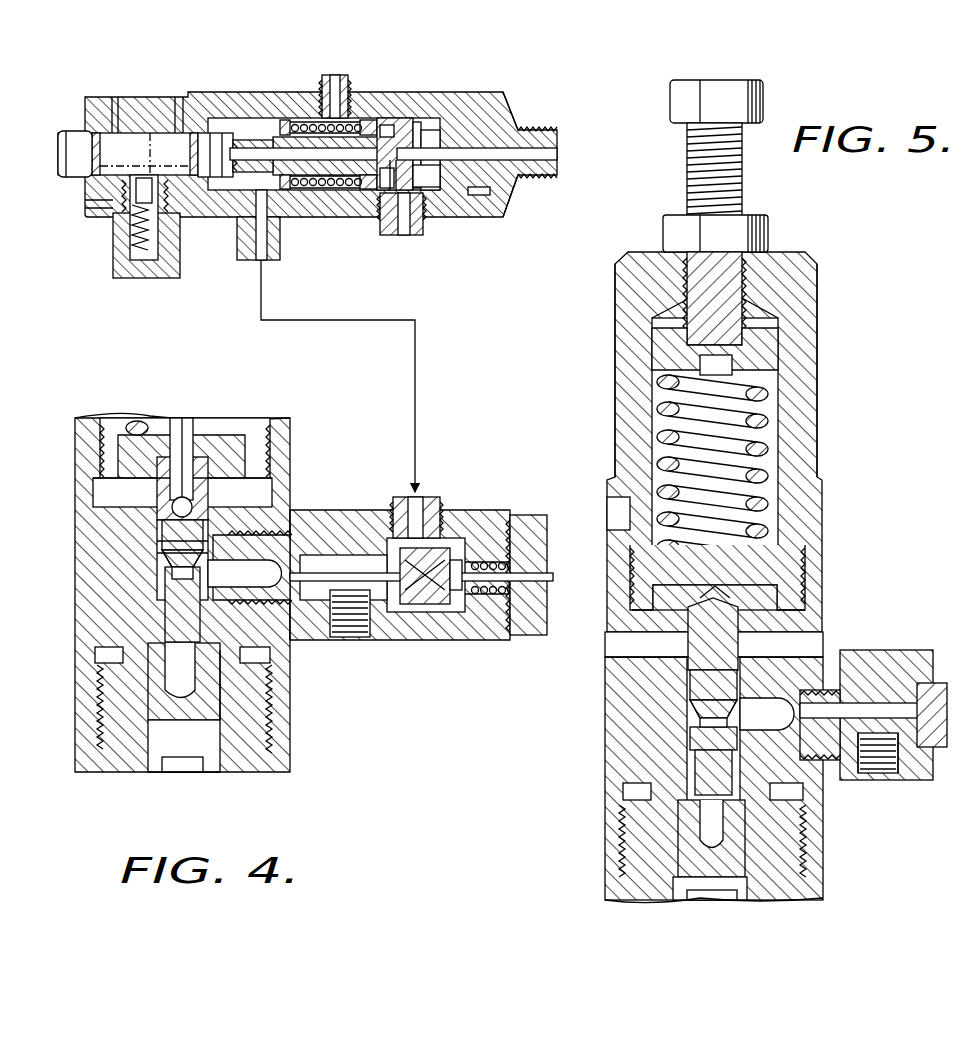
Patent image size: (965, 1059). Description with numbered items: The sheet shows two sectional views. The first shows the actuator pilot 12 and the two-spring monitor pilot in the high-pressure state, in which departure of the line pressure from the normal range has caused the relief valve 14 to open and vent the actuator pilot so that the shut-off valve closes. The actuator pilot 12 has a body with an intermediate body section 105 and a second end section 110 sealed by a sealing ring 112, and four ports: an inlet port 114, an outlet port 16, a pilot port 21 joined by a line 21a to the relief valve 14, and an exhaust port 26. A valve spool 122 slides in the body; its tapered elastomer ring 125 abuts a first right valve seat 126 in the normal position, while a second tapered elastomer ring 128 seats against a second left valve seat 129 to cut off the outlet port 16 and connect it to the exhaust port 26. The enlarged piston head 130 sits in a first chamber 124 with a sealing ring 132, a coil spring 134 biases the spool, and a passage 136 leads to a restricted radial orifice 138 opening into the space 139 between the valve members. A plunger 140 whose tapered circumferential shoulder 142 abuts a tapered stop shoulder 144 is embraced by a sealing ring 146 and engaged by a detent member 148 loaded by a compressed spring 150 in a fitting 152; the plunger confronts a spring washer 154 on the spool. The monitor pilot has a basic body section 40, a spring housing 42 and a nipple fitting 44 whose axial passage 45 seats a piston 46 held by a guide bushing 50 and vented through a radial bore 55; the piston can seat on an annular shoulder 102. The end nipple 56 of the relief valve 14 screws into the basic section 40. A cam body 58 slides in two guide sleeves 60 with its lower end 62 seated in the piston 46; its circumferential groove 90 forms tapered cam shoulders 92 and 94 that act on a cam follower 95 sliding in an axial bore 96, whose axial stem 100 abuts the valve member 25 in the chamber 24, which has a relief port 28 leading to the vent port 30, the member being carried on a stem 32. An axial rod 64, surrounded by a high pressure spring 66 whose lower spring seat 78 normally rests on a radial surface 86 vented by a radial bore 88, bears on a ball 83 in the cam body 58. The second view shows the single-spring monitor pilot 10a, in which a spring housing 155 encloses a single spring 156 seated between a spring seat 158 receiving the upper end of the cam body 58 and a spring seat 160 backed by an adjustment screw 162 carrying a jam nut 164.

In FIG. 5, the monitor pilot 10a is at (820, 383).
In FIG. 4, the actuator pilot 12 is at (95, 97).
In FIG. 4, the relief valve 14 is at (491, 642).
In FIG. 5, the relief valve 14 is at (920, 782).
In FIG. 4, the outlet port 16 is at (406, 235).
In FIG. 4, the pilot port 21 is at (256, 250).
In FIG. 4, the line 21a is at (416, 357).
In FIG. 4, the chamber 24 is at (456, 612).
In FIG. 4, the valve member 25 is at (428, 606).
In FIG. 4, the exhaust port 26 is at (557, 153).
In FIG. 4, the relief port 28 is at (380, 600).
In FIG. 5, the relief port 28 is at (900, 712).
In FIG. 4, the vent port 30 is at (345, 638).
In FIG. 5, the vent port 30 is at (878, 775).
In FIG. 4, the stem 32 is at (540, 560).
In FIG. 4, the basic body section 40 is at (85, 615).
In FIG. 5, the basic body section 40 is at (610, 757).
In FIG. 4, the spring housing 42 is at (106, 423).
In FIG. 4, the nipple fitting 44 is at (98, 766).
In FIG. 5, the nipple fitting 44 is at (795, 858).
In FIG. 4, the axial passage 45 is at (190, 774).
In FIG. 5, the axial passage 45 is at (690, 898).
In FIG. 4, the piston 46 is at (205, 764).
In FIG. 5, the piston 46 is at (690, 868).
In FIG. 4, the guide bushing 50 is at (150, 686).
In FIG. 5, the guide bushing 50 is at (711, 838).
In FIG. 4, the radial bore 55 is at (95, 656).
In FIG. 5, the radial bore 55 is at (713, 791).
In FIG. 4, the end nipple 56 is at (292, 642).
In FIG. 4, the cam body 58 is at (120, 502).
In FIG. 5, the cam body 58 is at (690, 665).
In FIG. 4, the guide sleeves 60 is at (160, 532).
In FIG. 5, the guide sleeves 60 is at (690, 765).
In FIG. 4, the lower end 62 is at (220, 672).
In FIG. 4, the axial rod 64 is at (186, 418).
In FIG. 4, the high pressure spring 66 is at (138, 422).
In FIG. 4, the lower spring seat 78 is at (125, 458).
In FIG. 4, the ball 83 is at (290, 505).
In FIG. 5, the radial surface 86 is at (640, 650).
In FIG. 4, the radial bore 88 is at (108, 487).
In FIG. 4, the circumferential groove 90 is at (180, 566).
In FIG. 4, the tapered cam shoulder 92 is at (172, 552).
In FIG. 5, the tapered cam shoulder 92 is at (700, 712).
In FIG. 4, the tapered cam shoulder 94 is at (180, 578).
In FIG. 5, the tapered cam shoulder 94 is at (705, 733).
In FIG. 4, the cam follower 95 is at (220, 557).
In FIG. 5, the cam follower 95 is at (760, 698).
In FIG. 4, the axial bore 96 is at (420, 497).
In FIG. 4, the axial stem 100 is at (356, 636).
In FIG. 5, the axial stem 100 is at (875, 700).
In FIG. 4, the annular shoulder 102 is at (155, 754).
In FIG. 5, the annular shoulder 102 is at (747, 890).
In FIG. 4, the intermediate body section 105 is at (230, 217).
In FIG. 4, the second end section 110 is at (508, 122).
In FIG. 4, the sealing ring 112 is at (478, 195).
In FIG. 4, the inlet port 114 is at (335, 75).
In FIG. 4, the valve spool 122 is at (350, 190).
In FIG. 4, the first chamber 124 is at (225, 120).
In FIG. 4, the tapered elastomer ring 125 is at (440, 118).
In FIG. 4, the first right valve seat 126 is at (450, 118).
In FIG. 4, the tapered elastomer ring 128 is at (395, 118).
In FIG. 4, the second left valve seat 129 is at (370, 118).
In FIG. 4, the piston head 130 is at (278, 120).
In FIG. 4, the sealing ring 132 is at (300, 140).
In FIG. 4, the coil spring 134 is at (312, 188).
In FIG. 4, the passage 136 is at (405, 118).
In FIG. 4, the restricted radial orifice 138 is at (392, 190).
In FIG. 4, the space 139 is at (428, 190).
In FIG. 4, the plunger 140 is at (72, 142).
In FIG. 4, the tapered circumferential shoulder 142 is at (148, 134).
In FIG. 4, the tapered stop shoulder 144 is at (118, 97).
In FIG. 4, the sealing ring 146 is at (178, 97).
In FIG. 4, the detent member 148 is at (100, 214).
In FIG. 4, the compressed spring 150 is at (130, 242).
In FIG. 4, the fitting 152 is at (115, 270).
In FIG. 4, the spring washer 154 is at (243, 130).
In FIG. 5, the spring housing 155 is at (817, 452).
In FIG. 5, the single spring 156 is at (757, 500).
In FIG. 5, the spring seat 158 is at (770, 604).
In FIG. 5, the spring seat 160 is at (770, 352).
In FIG. 5, the adjustment screw 162 is at (745, 186).
In FIG. 5, the jam nut 164 is at (768, 235).